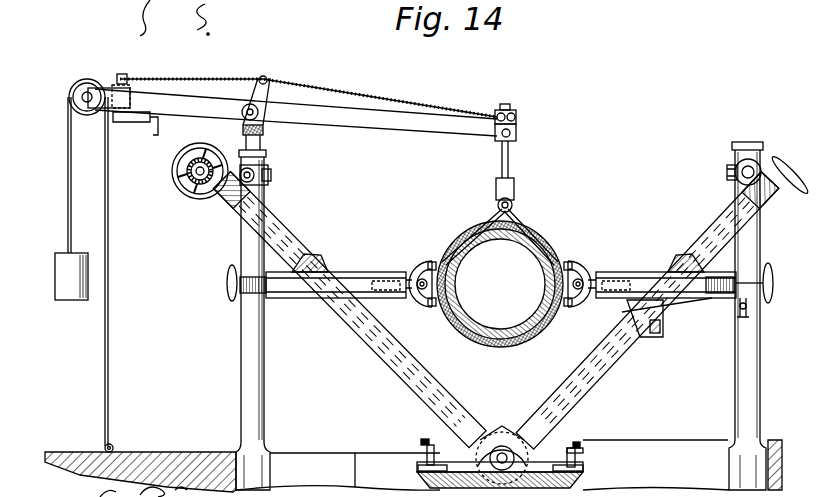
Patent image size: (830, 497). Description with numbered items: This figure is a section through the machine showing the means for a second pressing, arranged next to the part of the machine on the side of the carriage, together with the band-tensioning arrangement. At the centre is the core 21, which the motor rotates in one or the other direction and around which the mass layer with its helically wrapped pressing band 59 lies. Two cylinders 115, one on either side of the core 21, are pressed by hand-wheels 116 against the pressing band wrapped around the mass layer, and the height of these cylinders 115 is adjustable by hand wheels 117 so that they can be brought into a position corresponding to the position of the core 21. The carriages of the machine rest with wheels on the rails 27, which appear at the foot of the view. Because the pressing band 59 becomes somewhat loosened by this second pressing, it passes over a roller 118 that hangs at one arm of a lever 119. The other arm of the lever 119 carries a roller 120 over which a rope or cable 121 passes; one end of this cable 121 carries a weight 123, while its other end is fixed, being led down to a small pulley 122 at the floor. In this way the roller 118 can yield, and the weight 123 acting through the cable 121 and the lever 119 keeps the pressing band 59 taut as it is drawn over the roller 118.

The roller 120 is at (95, 70).
The lever 119 is at (387, 129).
The hand wheels 117 is at (179, 190).
The cord (chain) 121 is at (110, 279).
The weight 123 is at (75, 301).
The guide pulley 122 is at (113, 447).
The hand-wheels 116 is at (228, 284).
The cylinders 115 is at (435, 298).
The core 21 is at (468, 244).
The pressing band 59 is at (481, 211).
The roller 118 is at (520, 201).
The rails 27 is at (425, 440).